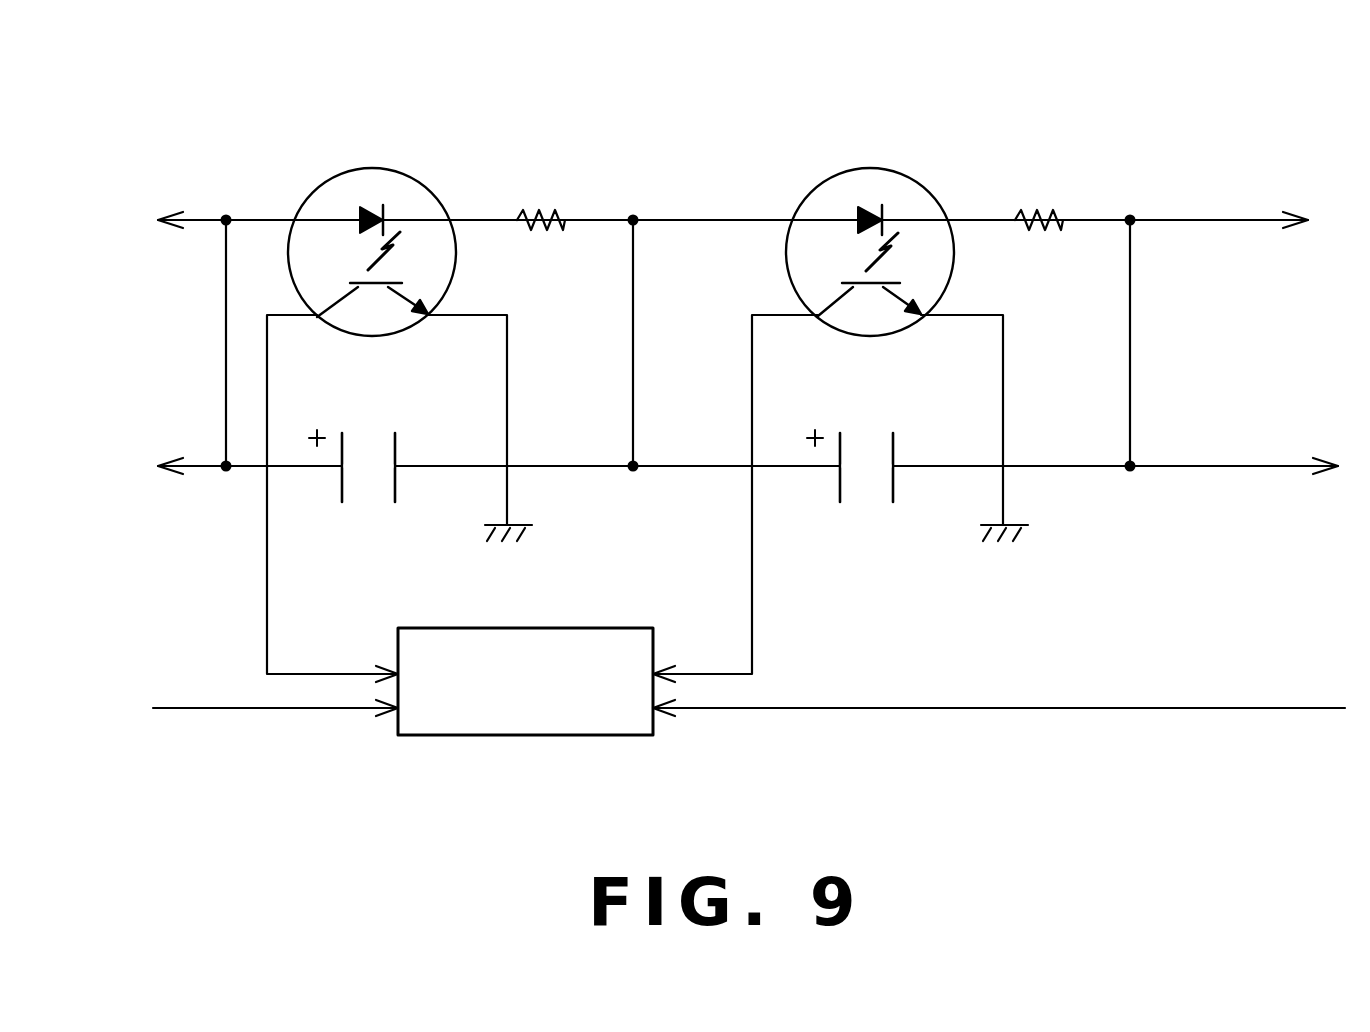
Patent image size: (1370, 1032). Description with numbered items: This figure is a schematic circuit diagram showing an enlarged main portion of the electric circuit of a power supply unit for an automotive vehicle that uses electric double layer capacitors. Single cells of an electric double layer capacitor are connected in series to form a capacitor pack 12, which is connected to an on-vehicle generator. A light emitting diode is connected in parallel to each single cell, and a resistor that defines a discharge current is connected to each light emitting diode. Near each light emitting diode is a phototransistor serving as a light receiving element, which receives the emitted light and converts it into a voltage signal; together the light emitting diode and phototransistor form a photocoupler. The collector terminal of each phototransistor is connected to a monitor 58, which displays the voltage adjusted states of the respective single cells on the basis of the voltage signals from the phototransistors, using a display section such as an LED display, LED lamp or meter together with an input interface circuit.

The capacitor pack 12 is at (1185, 517).
The monitor 58 is at (525, 737).